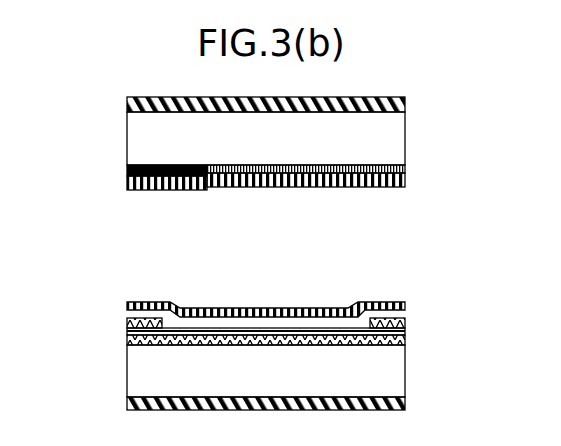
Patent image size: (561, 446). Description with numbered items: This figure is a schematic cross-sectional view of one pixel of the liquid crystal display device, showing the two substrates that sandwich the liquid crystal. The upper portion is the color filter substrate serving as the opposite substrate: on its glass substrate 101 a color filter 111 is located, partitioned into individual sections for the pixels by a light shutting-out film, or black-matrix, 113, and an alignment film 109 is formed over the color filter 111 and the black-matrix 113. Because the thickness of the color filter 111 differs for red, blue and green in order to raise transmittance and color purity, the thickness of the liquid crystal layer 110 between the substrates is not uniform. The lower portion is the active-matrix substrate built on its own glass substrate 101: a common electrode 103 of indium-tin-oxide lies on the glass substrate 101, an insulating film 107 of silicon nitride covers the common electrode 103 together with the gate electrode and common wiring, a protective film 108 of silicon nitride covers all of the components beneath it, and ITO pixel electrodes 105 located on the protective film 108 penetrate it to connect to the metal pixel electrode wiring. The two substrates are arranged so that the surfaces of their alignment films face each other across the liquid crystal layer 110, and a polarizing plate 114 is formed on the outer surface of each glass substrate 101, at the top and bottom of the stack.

The glass substrate 101 is at (407, 137).
The common electrode 103 is at (405, 338).
The pixel electrode 105 is at (405, 328).
The insulating film 107 is at (127, 325).
The protective film 108 is at (405, 311).
The alignment film 109 is at (175, 192).
The liquid crystal layer 110 is at (286, 248).
The color filter 111 is at (405, 170).
The light shutting-out film (black-matrix) 113 is at (127, 167).
The polarizing plate 114 is at (405, 106).